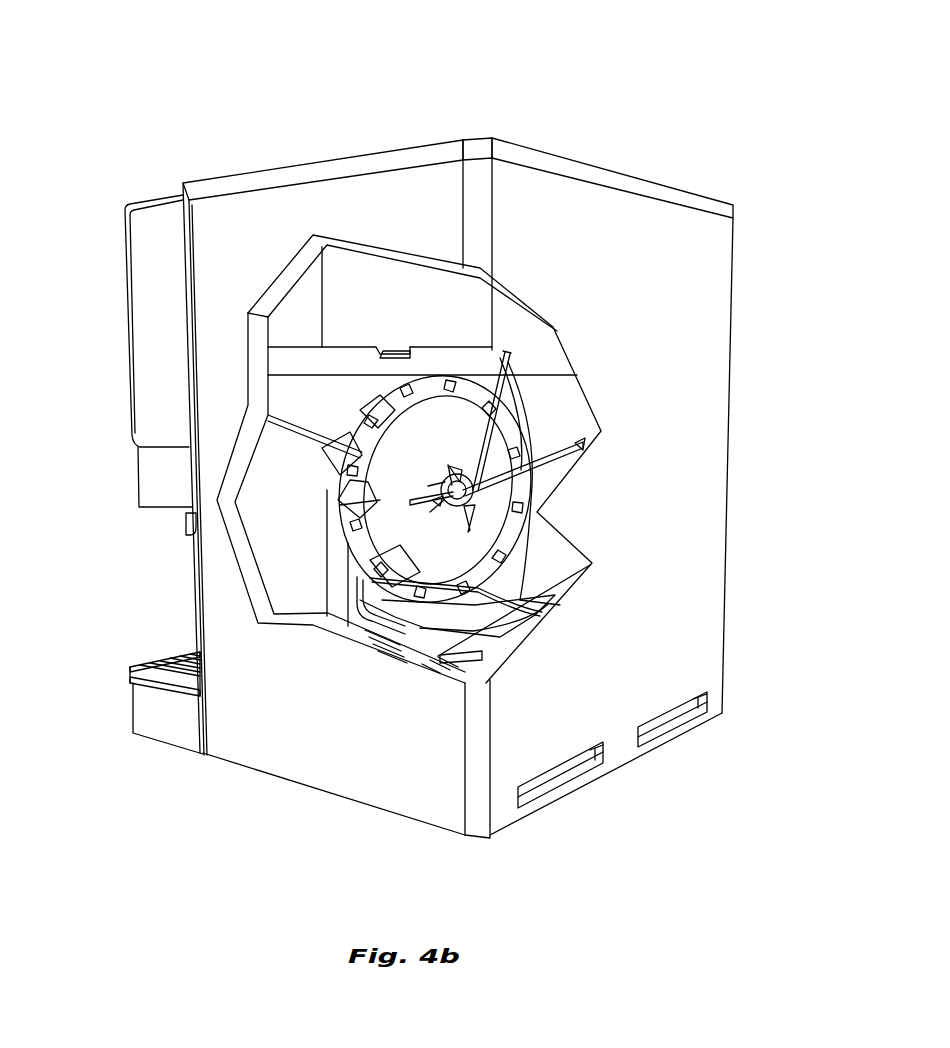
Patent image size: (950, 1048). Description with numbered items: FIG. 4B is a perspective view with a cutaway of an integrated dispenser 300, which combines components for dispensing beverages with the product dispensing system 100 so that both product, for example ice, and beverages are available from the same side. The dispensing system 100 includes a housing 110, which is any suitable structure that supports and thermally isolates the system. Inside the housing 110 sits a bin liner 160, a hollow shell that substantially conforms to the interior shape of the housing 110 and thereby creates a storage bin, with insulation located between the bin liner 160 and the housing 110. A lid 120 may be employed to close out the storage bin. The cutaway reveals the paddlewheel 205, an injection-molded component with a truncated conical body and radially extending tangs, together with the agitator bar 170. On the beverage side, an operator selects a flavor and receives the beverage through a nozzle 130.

The dispensing system 100 is at (426, 442).
The housing 110 is at (458, 493).
The lid 120 is at (568, 157).
The nozzle 130 is at (185, 520).
The bin liner 160 is at (558, 408).
The agitator bar 170 is at (566, 470).
The paddlewheel 205 is at (463, 496).
The integrated dispenser 300 is at (415, 429).